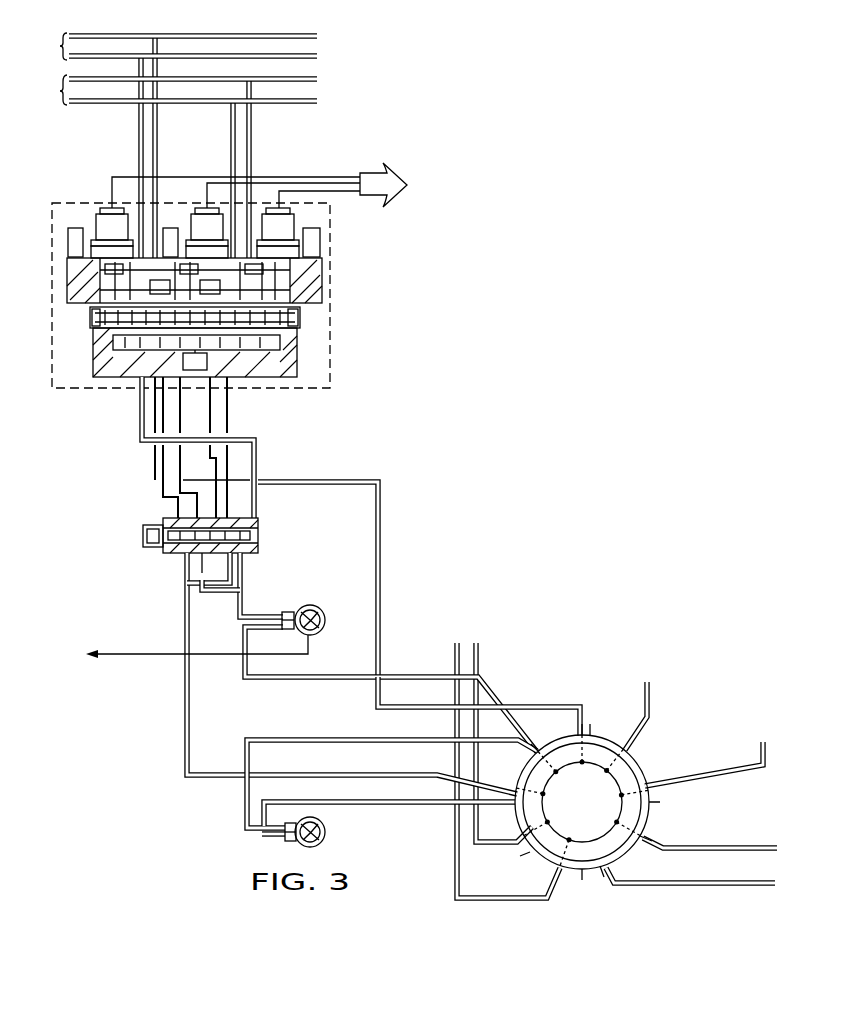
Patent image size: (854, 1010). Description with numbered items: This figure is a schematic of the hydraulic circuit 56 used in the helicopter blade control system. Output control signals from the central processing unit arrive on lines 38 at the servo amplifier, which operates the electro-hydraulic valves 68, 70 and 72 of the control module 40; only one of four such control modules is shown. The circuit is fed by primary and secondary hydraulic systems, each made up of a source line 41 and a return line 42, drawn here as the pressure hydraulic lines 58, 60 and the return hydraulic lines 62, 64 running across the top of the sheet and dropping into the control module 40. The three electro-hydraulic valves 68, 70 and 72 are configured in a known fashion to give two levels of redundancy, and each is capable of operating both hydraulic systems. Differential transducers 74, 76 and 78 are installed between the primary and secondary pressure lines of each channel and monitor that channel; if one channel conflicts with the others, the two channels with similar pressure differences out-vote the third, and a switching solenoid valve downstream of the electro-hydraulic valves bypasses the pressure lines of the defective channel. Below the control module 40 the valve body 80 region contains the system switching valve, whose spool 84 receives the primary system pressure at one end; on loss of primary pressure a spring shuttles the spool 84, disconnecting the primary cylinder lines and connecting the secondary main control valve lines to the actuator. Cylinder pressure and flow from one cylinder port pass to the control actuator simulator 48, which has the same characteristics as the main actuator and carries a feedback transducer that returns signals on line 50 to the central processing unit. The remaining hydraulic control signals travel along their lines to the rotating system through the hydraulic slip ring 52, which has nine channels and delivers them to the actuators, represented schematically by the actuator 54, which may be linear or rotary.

The lines 38 is at (366, 173).
The control module 40 is at (194, 280).
The source line 41 is at (177, 33).
The return line 42 is at (177, 72).
The control actuator simulator 48 is at (314, 607).
The lines 50 is at (150, 653).
The hydraulic slip ring 52 is at (546, 856).
The actuator 54 is at (325, 829).
The hydraulic circuit 56 is at (177, 129).
The pressure hydraulic line 58 is at (78, 37).
The pressure hydraulic line 60 is at (180, 78).
The return hydraulic line 62 is at (124, 55).
The return hydraulic line 64 is at (118, 104).
The electro-hydraulic valve 68 is at (100, 209).
The electro-hydraulic valve 70 is at (196, 208).
The electro-hydraulic valve 72 is at (296, 220).
The differential transducer 74 is at (68, 236).
The differential transducer 76 is at (172, 225).
The differential transducer 78 is at (320, 242).
The valve body 80 is at (100, 337).
The spool 84 is at (259, 548).